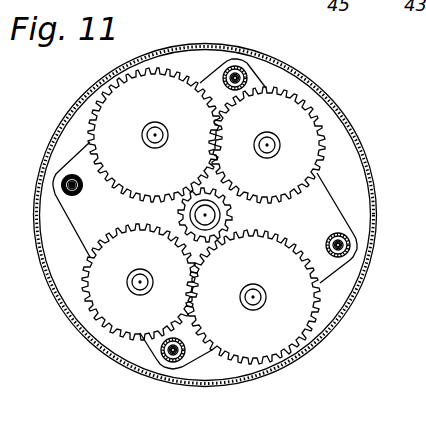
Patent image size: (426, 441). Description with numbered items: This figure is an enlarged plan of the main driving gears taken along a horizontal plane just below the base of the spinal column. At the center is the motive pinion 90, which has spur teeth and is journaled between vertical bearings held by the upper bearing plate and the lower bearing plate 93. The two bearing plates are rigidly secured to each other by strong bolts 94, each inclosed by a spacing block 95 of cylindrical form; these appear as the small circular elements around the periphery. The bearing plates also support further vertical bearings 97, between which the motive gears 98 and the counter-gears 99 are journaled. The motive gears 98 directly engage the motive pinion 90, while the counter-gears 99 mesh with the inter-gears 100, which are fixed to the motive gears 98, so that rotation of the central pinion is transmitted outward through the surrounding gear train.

The motive pinion 90 is at (220, 213).
The lower bearing plate 93 is at (352, 230).
The bolts 94 is at (245, 78).
The spacing blocks 95 is at (352, 247).
The vertical bearings 97 is at (175, 125).
The motive gears 98 is at (133, 202).
The counter-gears 99 is at (322, 153).
The inter-gears 100 is at (152, 180).